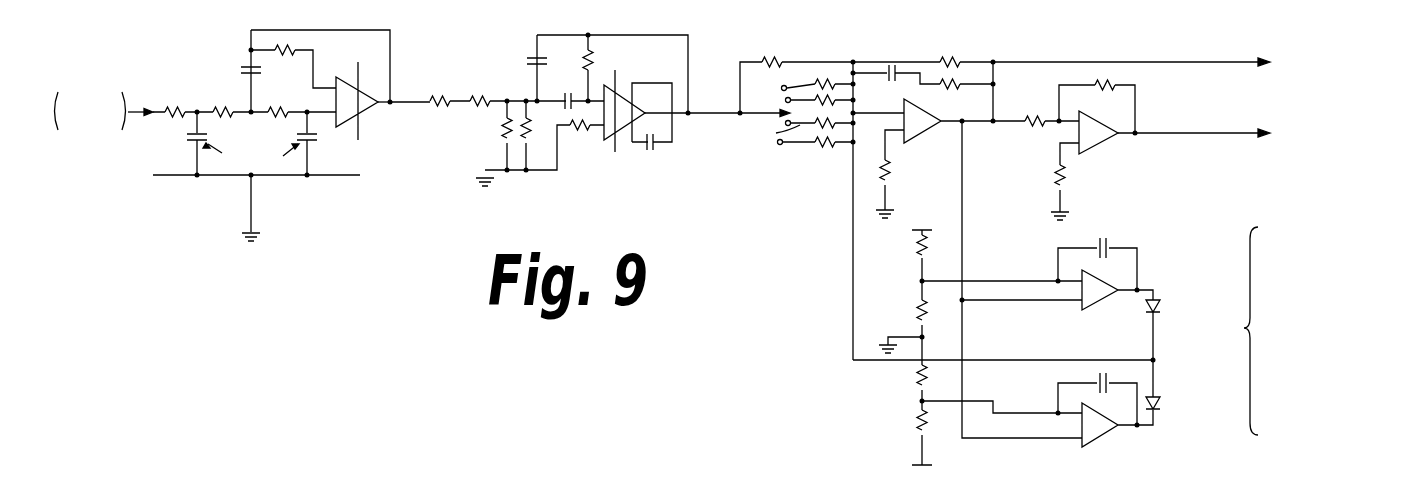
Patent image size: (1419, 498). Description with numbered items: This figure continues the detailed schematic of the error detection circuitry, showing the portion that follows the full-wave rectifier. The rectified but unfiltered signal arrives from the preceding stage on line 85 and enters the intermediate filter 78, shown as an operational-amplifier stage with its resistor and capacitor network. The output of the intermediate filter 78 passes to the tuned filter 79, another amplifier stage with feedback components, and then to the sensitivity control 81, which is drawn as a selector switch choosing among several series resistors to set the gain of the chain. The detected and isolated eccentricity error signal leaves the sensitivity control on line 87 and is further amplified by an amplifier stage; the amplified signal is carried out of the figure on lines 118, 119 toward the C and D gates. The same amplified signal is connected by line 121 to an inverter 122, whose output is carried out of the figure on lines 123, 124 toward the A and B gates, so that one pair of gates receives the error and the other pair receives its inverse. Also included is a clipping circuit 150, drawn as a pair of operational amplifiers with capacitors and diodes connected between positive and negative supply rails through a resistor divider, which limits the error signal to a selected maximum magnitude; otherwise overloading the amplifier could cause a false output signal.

The intermediate filter 78 is at (287, 208).
The tuned filter 79 is at (602, 182).
The sensitivity control 81 is at (773, 162).
The line 85 is at (128, 112).
The line 87 is at (707, 108).
The line 118 is at (1179, 42).
The line 119 is at (1170, 62).
The line 121 is at (914, 38).
The inverter 122 is at (1075, 46).
The line 123 is at (1239, 118).
The line 124 is at (1150, 133).
The clipping circuit 150 is at (1262, 328).